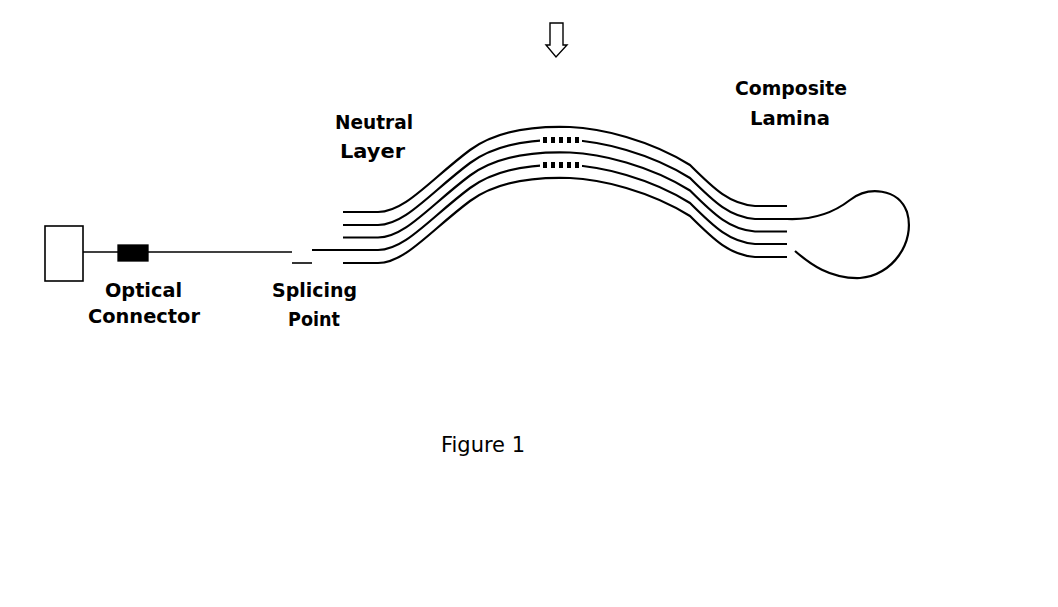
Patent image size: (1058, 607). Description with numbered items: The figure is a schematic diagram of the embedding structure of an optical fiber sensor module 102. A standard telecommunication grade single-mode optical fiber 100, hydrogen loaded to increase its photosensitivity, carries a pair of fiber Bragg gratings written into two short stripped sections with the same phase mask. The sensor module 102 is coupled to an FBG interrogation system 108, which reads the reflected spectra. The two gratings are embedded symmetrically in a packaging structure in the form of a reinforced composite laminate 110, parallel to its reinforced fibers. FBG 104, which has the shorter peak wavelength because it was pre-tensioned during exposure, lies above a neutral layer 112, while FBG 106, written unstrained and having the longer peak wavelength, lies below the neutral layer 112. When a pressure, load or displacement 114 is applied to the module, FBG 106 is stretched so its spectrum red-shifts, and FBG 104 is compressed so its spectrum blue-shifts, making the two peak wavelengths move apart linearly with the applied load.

The single-mode optical fiber 100 is at (323, 235).
The sensor module 102 is at (610, 145).
The FBG 104 is at (560, 135).
The FBG 106 is at (560, 168).
The FBG interrogation system 108 is at (67, 228).
The reinforced composite laminate 110 is at (727, 243).
The neutral layer 112 is at (393, 227).
The pressure/load/displacement 114 is at (583, 36).